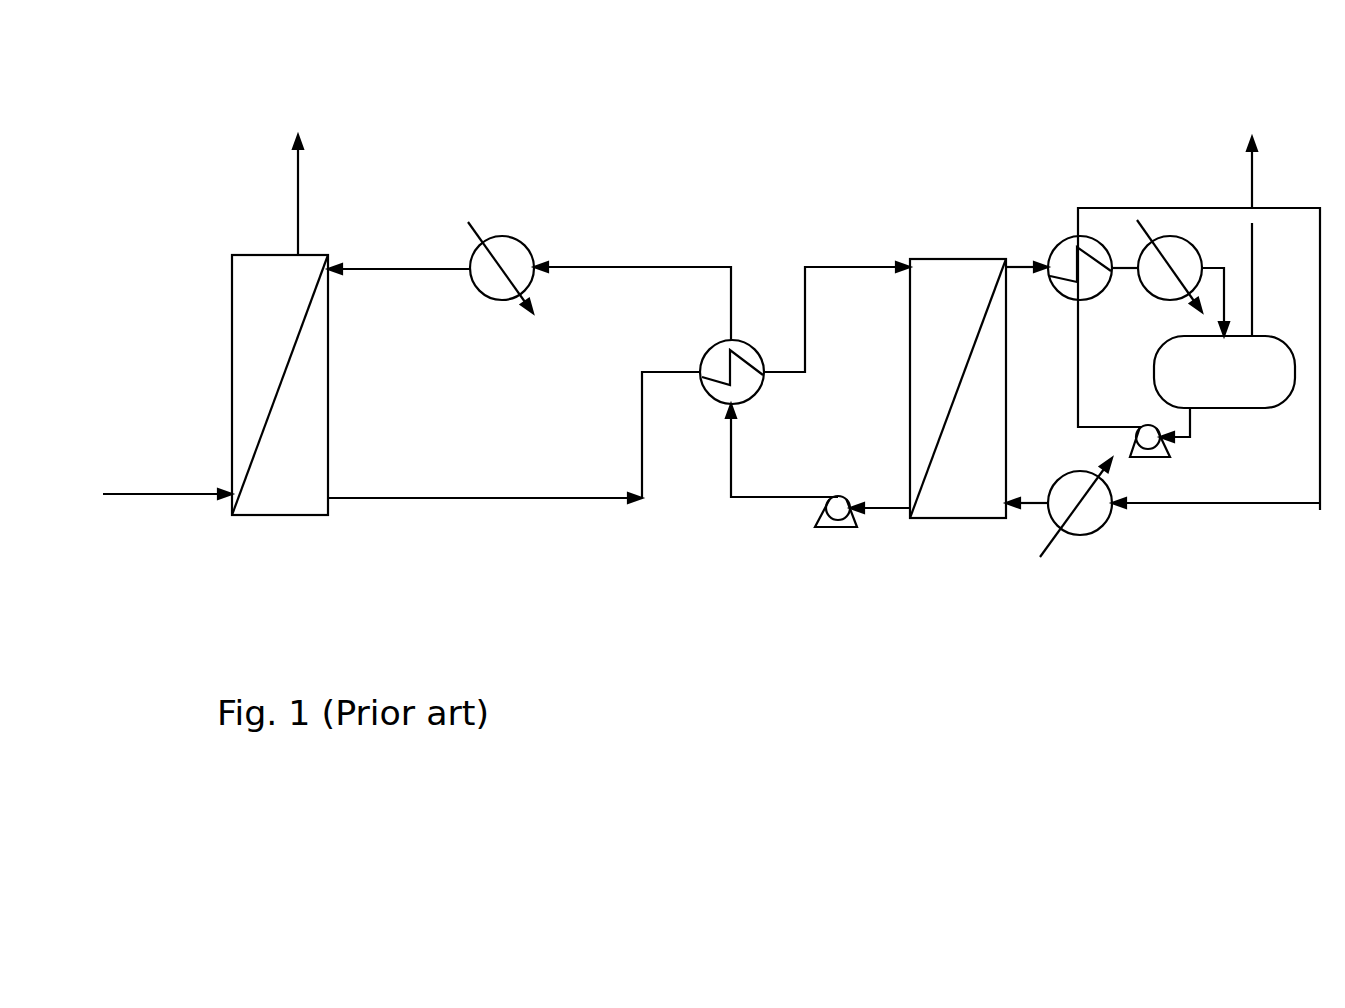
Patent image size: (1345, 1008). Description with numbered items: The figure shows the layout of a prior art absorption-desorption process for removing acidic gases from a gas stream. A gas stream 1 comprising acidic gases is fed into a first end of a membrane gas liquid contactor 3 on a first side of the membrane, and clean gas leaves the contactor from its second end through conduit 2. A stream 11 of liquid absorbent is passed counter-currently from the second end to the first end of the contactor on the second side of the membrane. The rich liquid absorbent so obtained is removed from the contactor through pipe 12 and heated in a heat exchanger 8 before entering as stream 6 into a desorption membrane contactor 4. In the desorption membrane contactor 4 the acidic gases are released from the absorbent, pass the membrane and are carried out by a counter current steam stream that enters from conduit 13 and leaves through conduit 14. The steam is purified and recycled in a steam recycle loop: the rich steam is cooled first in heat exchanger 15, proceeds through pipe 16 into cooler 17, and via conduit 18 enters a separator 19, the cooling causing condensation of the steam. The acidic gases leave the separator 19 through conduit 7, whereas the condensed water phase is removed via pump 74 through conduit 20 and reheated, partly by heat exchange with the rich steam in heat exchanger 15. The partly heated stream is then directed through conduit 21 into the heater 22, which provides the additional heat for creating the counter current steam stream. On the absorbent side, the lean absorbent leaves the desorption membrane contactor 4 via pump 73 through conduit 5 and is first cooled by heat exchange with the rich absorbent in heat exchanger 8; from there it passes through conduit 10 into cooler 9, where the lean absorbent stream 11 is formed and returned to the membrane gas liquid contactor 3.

The gas stream 1 is at (167, 474).
The conduit 2 is at (298, 173).
The membrane gas liquid contactor 3 is at (280, 411).
The desorption membrane contactor 4 is at (958, 412).
The conduit 5 is at (818, 458).
The stream 6 is at (837, 295).
The conduit 7 is at (1258, 212).
The heat exchanger 8 is at (737, 382).
The cooler 9 is at (501, 248).
The conduit 10 is at (632, 284).
The stream of liquid absorbent 11 is at (399, 251).
The pipe 12 is at (514, 457).
The conduit 13 is at (1027, 484).
The conduit 14 is at (1027, 245).
The heat exchanger 15 is at (1092, 278).
The pipe 16 is at (1125, 250).
The cooler 17 is at (1169, 274).
The conduit 18 is at (1220, 283).
The separator 19 is at (1224, 372).
The conduit 20 is at (1199, 359).
The conduit 21 is at (1216, 519).
The heater 22 is at (1076, 516).
The pump 73 is at (835, 531).
The pump 74 is at (1170, 451).